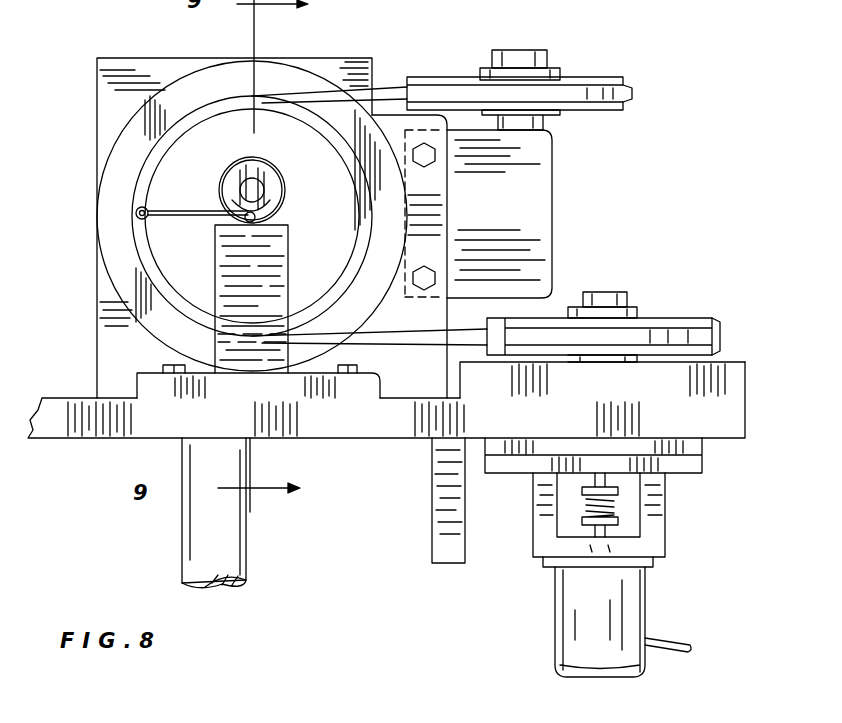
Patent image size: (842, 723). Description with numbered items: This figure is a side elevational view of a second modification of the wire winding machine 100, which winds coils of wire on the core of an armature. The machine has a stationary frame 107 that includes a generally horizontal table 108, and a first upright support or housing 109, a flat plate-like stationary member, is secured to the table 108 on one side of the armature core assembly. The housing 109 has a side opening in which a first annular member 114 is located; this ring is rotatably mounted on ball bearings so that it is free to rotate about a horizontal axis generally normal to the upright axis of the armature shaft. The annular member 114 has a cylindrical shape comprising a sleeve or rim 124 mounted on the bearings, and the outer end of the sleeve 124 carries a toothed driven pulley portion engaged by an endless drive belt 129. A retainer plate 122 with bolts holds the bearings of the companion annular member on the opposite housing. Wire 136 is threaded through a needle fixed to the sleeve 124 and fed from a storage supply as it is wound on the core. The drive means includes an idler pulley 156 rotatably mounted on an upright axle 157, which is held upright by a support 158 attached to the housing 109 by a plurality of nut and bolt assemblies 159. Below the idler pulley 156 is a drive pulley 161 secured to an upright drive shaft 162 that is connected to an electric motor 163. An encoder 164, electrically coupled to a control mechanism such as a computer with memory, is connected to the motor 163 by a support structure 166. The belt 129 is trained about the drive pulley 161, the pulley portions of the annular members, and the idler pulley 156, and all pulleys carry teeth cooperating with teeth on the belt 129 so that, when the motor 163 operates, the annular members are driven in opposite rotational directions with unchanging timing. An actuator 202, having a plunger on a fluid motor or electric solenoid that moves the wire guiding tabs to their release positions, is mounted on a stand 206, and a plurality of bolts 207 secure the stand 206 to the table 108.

The wire winding machine 100 is at (666, 84).
The stationary frame 107 is at (84, 129).
The table 108 is at (72, 442).
The first upright housing 109 is at (120, 72).
The first annular member 114 is at (130, 196).
The retainer plate 122 is at (128, 163).
The sleeve 124 is at (163, 273).
The endless drive belt 129 is at (632, 93).
The wire 136 is at (195, 216).
The idler pulley 156 is at (587, 80).
The upright axle 157 is at (528, 50).
The support 158 is at (542, 213).
The nut and bolt assemblies 159 is at (427, 282).
The drive pulley 161 is at (677, 320).
The upright drive shaft 162 is at (597, 292).
The electric motor 163 is at (697, 447).
The encoder 164 is at (622, 602).
The support structure 166 is at (653, 498).
The actuator 202 is at (238, 143).
The stand 206 is at (272, 270).
The bolts 207 is at (173, 365).